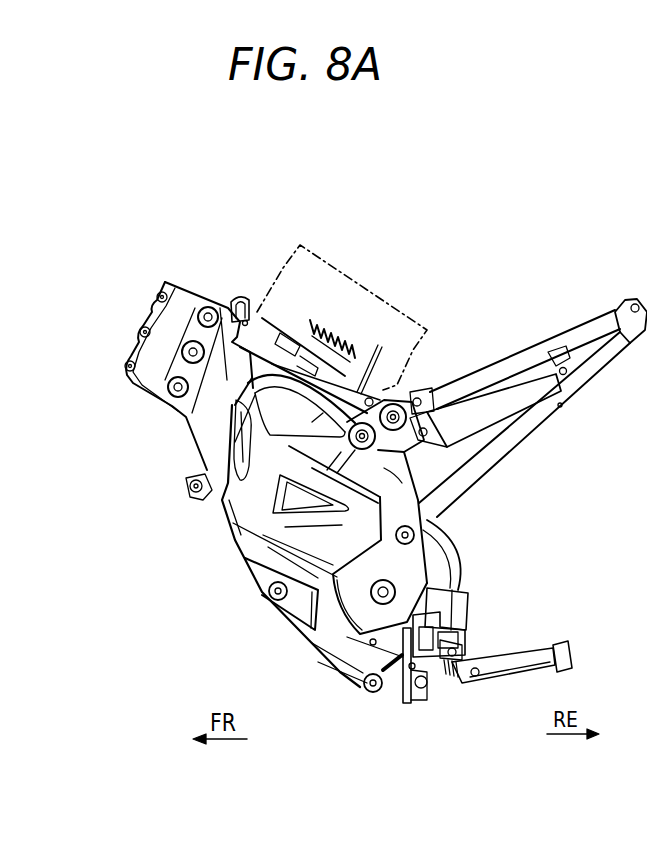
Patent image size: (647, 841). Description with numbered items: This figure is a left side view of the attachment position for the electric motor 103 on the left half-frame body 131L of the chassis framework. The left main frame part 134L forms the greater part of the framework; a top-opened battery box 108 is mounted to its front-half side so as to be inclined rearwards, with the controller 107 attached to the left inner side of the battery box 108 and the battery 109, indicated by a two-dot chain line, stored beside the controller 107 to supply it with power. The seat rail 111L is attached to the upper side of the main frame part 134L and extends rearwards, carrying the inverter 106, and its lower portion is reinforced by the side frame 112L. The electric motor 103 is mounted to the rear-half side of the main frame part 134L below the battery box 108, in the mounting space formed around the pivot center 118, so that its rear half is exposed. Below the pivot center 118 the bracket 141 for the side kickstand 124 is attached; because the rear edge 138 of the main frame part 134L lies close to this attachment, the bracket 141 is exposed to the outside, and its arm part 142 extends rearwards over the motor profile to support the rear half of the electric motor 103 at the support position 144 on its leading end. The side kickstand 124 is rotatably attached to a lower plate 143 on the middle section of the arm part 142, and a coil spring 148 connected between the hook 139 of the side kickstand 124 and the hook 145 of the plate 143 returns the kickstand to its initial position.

The electric motor 103 is at (447, 575).
The inverter 106 is at (485, 427).
The controller 107 is at (303, 353).
The battery box 108 is at (287, 412).
The battery 109 is at (333, 262).
The seat rail 111L is at (505, 362).
The side frame 112L is at (540, 418).
The pivot center 118 is at (380, 594).
The side kickstand 124 is at (465, 690).
The left half-frame body 131L is at (191, 596).
The left main frame part 134L is at (253, 502).
The rear edge 138 is at (425, 557).
The hook 139 is at (477, 676).
The bracket 141 is at (423, 647).
The arm part 142 is at (555, 600).
The lower plate 143 is at (405, 702).
The support position 144 is at (458, 652).
The hook 145 is at (400, 665).
The coil spring 148 is at (448, 672).